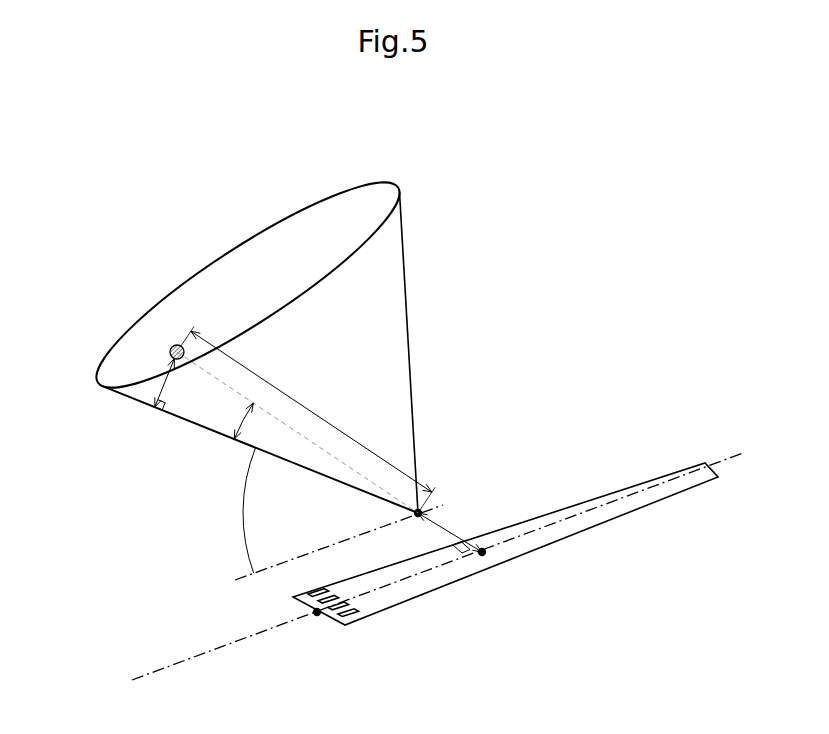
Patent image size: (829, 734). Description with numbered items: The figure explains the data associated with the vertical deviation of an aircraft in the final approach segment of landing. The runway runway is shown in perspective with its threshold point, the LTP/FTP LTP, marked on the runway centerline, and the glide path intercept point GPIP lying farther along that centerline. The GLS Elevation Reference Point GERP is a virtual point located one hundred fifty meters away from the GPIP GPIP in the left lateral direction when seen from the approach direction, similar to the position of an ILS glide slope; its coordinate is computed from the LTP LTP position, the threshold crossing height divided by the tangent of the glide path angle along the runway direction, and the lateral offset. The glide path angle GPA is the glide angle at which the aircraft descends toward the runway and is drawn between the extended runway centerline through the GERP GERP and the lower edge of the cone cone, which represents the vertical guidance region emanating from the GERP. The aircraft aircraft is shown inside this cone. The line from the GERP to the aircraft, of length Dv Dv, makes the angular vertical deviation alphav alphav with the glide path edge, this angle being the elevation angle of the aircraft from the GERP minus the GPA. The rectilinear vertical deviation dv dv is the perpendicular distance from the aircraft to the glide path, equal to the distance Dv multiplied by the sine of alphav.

The vertical guidance cone (signal coverage) cone is at (248, 334).
The GLS Elevation Reference Point GERP is at (339, 542).
The element aircraft is at (172, 344).
The distance Dv from GERP to aircraft Dv is at (308, 419).
The rectilinear vertical deviation dv is at (170, 385).
The angular vertical deviation alphav is at (234, 419).
The glide path angle GPA is at (220, 510).
The element runway is at (404, 573).
The landing threshold point / fictitious threshold point LTP is at (339, 630).
The glide path intercept point GPIP is at (469, 548).